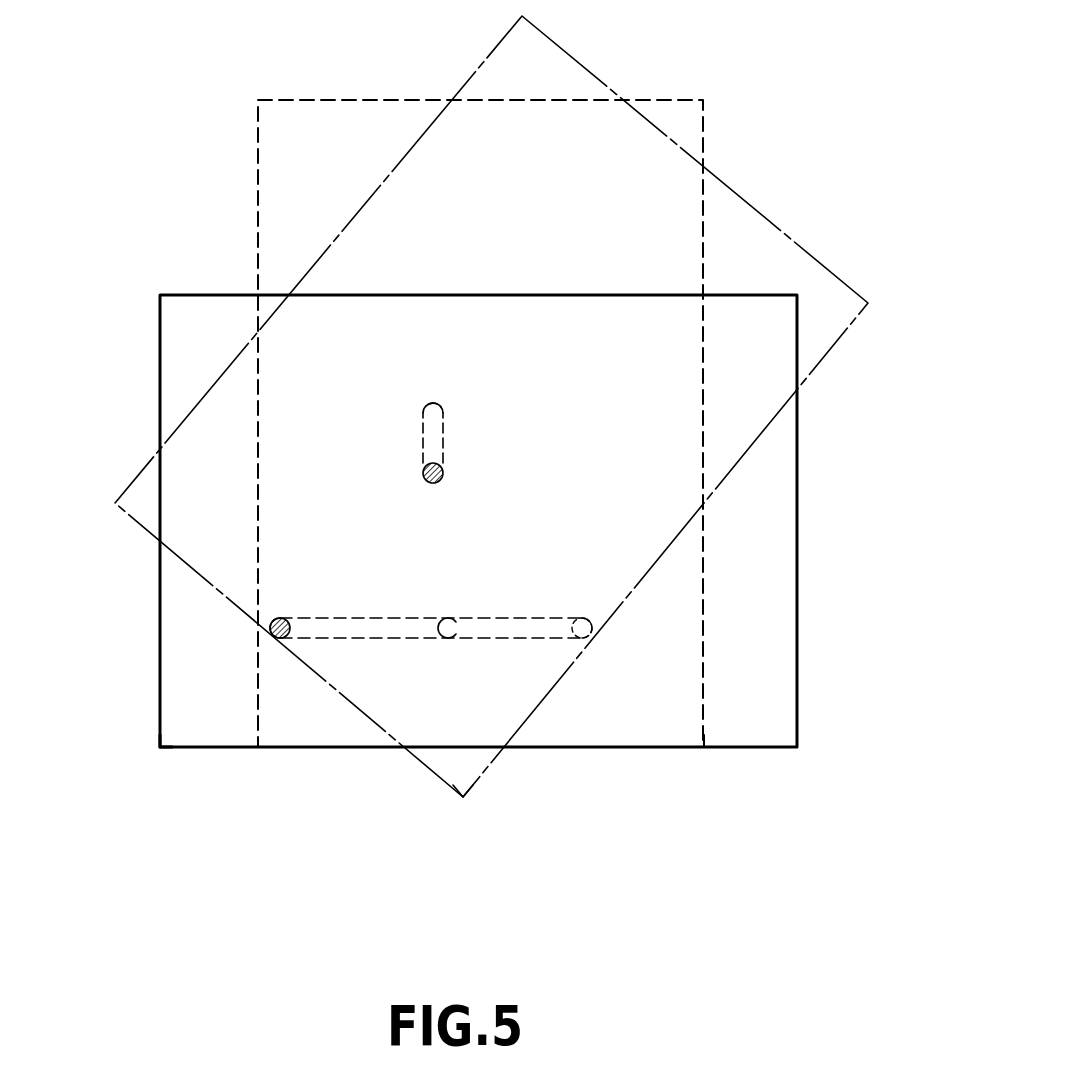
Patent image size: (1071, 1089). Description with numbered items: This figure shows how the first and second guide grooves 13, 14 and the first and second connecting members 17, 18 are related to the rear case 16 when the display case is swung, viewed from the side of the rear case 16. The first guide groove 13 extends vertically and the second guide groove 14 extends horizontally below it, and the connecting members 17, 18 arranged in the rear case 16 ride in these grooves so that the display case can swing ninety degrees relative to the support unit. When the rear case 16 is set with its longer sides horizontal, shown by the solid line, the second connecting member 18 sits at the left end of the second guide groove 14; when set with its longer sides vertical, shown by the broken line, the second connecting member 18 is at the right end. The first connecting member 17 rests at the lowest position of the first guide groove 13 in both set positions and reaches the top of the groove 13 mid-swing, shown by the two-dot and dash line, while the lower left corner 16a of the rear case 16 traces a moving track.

The first guide groove 13 is at (445, 450).
The second guide groove 14 is at (356, 638).
The rear case 16 is at (760, 213).
The lower left corner 16a is at (160, 747).
The first connecting member 17 is at (437, 403).
The second connecting member 18 is at (277, 634).